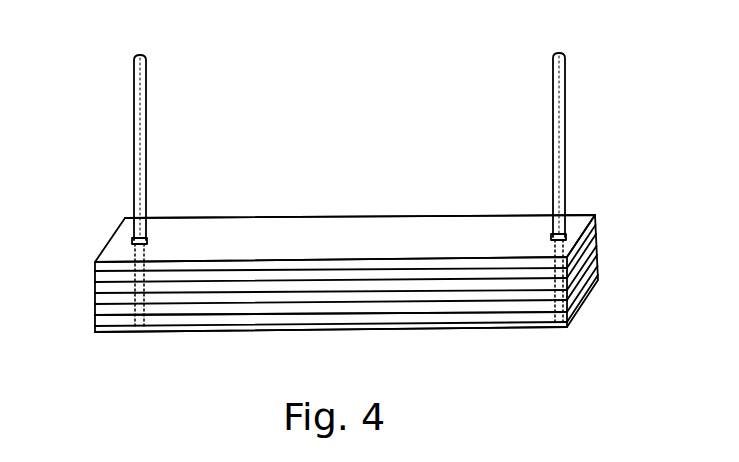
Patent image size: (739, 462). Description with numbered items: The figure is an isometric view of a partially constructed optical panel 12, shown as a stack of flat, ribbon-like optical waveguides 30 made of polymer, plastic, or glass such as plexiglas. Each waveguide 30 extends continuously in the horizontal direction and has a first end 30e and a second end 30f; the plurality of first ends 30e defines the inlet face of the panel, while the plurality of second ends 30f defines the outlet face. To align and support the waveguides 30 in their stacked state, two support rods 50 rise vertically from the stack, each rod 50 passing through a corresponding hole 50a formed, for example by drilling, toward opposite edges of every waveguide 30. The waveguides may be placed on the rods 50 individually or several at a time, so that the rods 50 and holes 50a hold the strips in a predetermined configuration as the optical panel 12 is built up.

The support rod 50 is at (135, 121).
The hole 50a is at (144, 241).
The optical waveguide 30 is at (296, 238).
The first end 30e is at (372, 218).
The second end 30f is at (212, 306).
The optical panel 12 is at (466, 304).